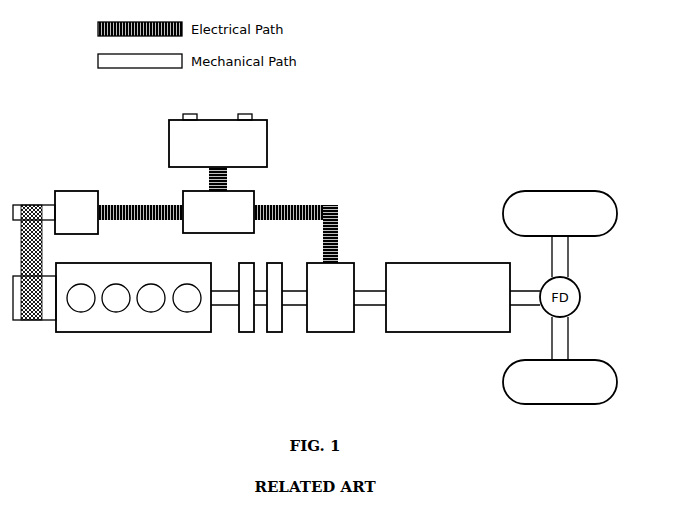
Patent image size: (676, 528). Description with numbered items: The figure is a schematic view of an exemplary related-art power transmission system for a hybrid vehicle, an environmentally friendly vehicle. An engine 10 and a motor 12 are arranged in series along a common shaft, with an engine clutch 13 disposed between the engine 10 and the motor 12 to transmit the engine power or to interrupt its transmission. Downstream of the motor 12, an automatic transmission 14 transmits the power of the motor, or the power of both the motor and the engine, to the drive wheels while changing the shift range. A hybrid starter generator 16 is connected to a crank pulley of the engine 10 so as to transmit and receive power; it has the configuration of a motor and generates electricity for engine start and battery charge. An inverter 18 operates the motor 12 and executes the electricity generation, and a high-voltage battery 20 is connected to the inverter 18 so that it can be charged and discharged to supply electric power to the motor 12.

The engine 10 is at (132, 332).
The motor 12 is at (330, 332).
The engine clutch 13 is at (275, 332).
The automatic transmission 14 is at (436, 332).
The hybrid starter generator (HSG) 16 is at (76, 191).
The inverter 18 is at (254, 191).
The high-voltage battery 20 is at (267, 143).